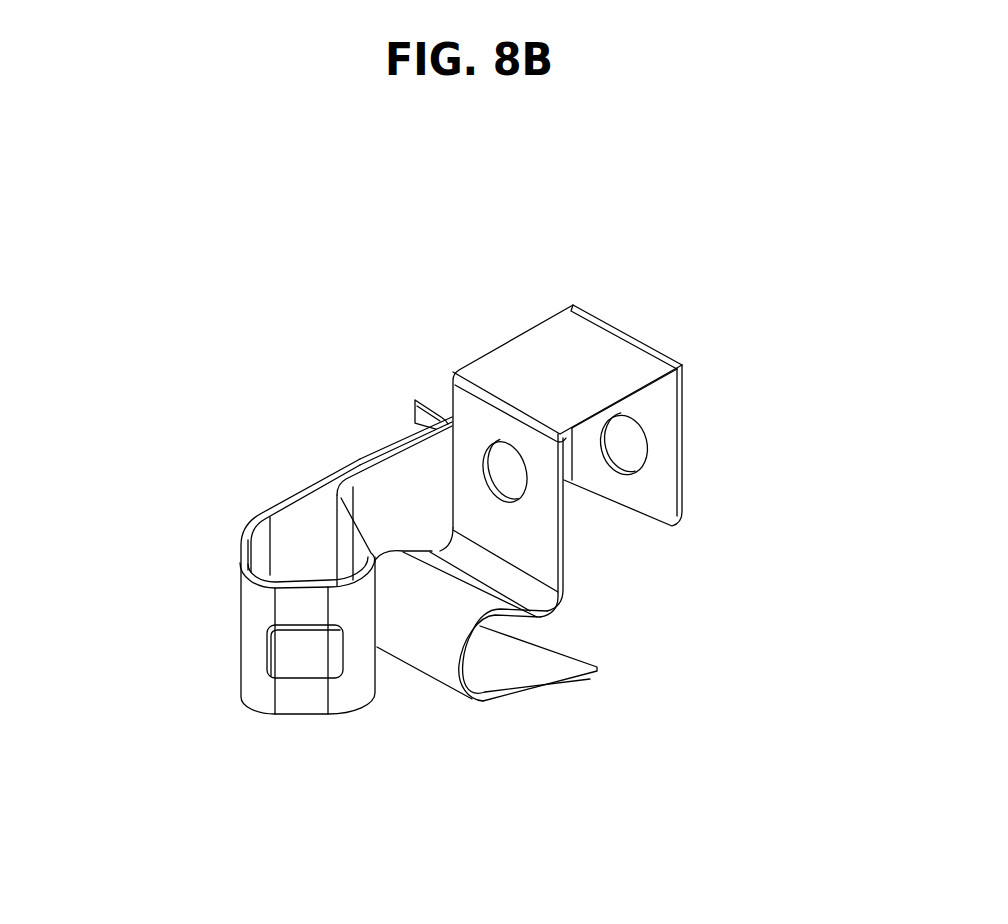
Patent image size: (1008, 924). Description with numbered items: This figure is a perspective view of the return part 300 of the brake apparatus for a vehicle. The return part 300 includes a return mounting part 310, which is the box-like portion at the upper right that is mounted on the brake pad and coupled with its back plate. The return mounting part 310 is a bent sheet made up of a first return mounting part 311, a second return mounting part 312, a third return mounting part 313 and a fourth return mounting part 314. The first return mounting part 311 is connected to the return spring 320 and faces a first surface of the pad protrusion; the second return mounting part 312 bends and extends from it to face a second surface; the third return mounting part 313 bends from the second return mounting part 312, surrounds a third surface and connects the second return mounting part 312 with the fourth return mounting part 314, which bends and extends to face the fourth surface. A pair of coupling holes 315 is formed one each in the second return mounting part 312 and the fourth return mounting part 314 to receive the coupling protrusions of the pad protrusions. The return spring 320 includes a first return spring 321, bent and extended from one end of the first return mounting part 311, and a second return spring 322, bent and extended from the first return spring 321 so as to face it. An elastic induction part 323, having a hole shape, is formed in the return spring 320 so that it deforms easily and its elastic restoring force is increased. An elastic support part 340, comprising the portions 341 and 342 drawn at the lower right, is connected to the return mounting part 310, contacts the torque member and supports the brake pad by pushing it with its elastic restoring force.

The return part 300 is at (758, 239).
The return mounting part 310 is at (712, 346).
The first return mounting part 311 is at (415, 468).
The second return mounting part 312 is at (668, 455).
The third return mounting part 313 is at (557, 352).
The fourth return mounting part 314 is at (533, 547).
The coupling hole 315 is at (512, 478).
The return spring 320 is at (233, 545).
The first return spring 321 is at (348, 513).
The second return spring 322 is at (293, 522).
The elastic induction part 323 is at (290, 653).
The elastic support part 340 is at (585, 753).
The support plate 341 is at (434, 640).
The support tab 342 is at (525, 688).